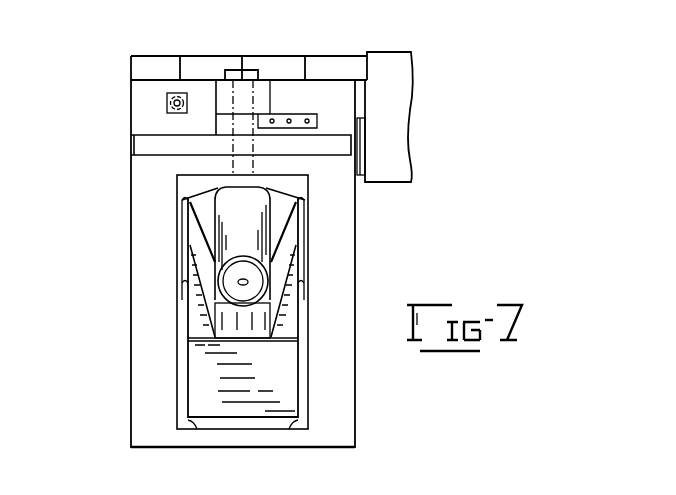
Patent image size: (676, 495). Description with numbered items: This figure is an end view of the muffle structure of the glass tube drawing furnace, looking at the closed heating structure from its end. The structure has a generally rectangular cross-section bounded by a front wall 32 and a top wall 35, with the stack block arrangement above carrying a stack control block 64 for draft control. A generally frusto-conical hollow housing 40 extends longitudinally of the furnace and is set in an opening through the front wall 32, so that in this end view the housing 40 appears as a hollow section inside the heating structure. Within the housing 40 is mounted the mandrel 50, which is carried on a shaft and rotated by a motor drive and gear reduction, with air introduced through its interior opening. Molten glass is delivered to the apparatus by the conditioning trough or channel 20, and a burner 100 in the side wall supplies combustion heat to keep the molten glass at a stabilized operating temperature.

The conditioning trough or channel 20 is at (388, 167).
The front wall 32 is at (345, 400).
The top wall 35 is at (208, 56).
The hollow housing 40 is at (277, 306).
The mandrel 50 is at (253, 233).
The stack control block 64 is at (260, 70).
The burner 100 is at (167, 103).